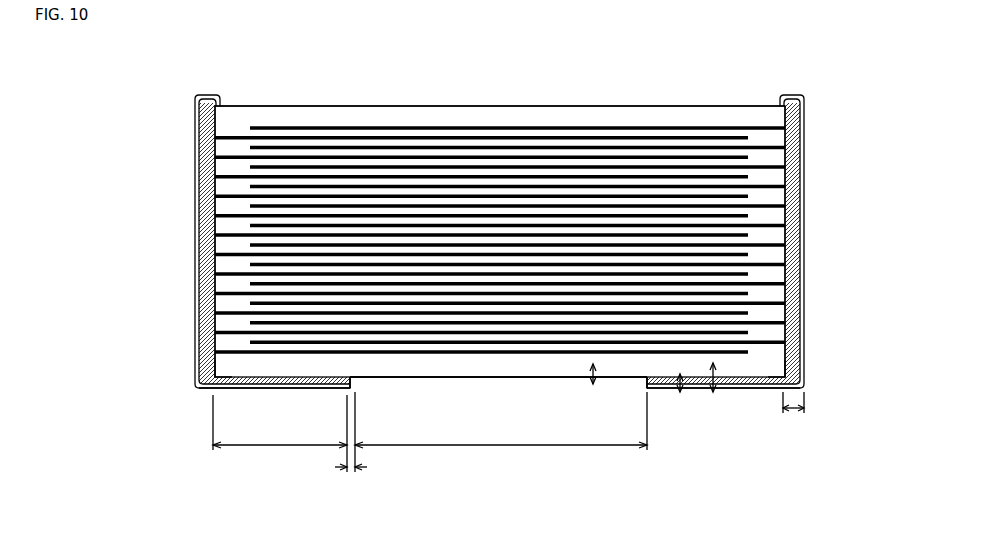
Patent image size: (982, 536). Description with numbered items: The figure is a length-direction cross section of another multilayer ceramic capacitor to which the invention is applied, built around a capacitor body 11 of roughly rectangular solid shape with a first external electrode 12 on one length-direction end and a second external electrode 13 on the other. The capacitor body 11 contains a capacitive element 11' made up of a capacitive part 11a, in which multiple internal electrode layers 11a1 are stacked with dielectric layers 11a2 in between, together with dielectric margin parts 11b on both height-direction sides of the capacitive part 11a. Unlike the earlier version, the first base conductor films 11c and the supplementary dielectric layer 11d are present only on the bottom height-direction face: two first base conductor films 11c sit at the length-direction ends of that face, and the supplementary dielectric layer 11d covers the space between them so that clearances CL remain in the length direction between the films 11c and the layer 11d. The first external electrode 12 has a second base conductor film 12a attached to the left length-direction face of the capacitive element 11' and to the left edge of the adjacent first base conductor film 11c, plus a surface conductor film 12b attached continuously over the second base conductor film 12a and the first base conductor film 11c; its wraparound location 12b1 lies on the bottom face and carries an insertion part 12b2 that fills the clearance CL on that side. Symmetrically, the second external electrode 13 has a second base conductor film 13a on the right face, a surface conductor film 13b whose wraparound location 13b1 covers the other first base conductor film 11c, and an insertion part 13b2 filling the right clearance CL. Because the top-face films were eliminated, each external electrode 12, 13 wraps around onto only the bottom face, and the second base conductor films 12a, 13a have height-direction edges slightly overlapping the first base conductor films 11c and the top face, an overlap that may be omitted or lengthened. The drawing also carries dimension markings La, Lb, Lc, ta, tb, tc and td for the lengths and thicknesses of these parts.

The capacitor body 11 is at (500, 273).
The capacitive element 11' is at (498, 409).
The capacitive part 11a is at (500, 246).
The internal electrode layers 11a1 is at (433, 128).
The dielectric layers 11a2 is at (481, 138).
The dielectric margin parts 11b is at (527, 118).
The first base conductor films 11c is at (215, 372).
The supplementary dielectric layers 11d is at (567, 380).
The first external electrode 12 is at (262, 268).
The second base conductor film 12a is at (205, 300).
The surface conductor film 12b is at (195, 186).
The wraparound location 12b1 is at (245, 390).
The insertion parts 12b2 is at (358, 390).
The second external electrode 13 is at (737, 268).
The second base conductor film 13a is at (795, 300).
The surface conductor film 13b is at (806, 186).
The wraparound location 13b1 is at (757, 390).
The insertion parts 13b2 is at (646, 388).
The clearances CL is at (347, 391).
The band length La is at (280, 434).
The gap length Lb is at (501, 433).
The length Lc is at (358, 479).
The thickness ta is at (721, 389).
The thickness tb is at (601, 389).
The thickness tc is at (793, 411).
The thickness td is at (688, 395).